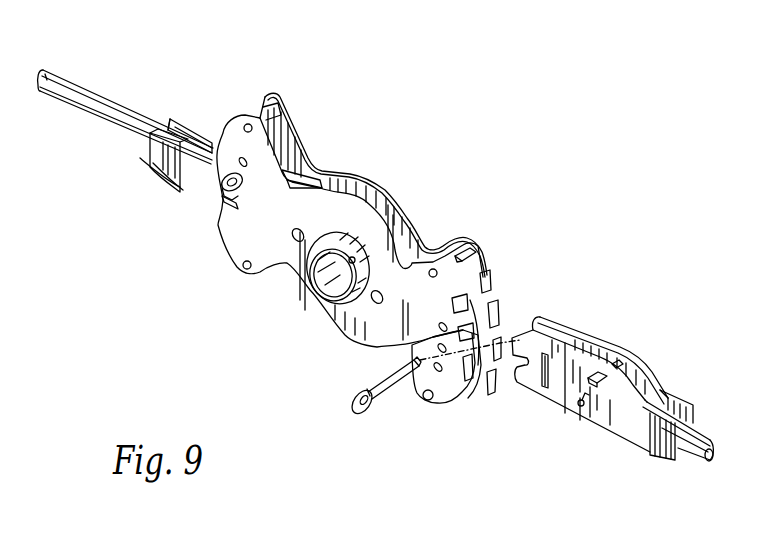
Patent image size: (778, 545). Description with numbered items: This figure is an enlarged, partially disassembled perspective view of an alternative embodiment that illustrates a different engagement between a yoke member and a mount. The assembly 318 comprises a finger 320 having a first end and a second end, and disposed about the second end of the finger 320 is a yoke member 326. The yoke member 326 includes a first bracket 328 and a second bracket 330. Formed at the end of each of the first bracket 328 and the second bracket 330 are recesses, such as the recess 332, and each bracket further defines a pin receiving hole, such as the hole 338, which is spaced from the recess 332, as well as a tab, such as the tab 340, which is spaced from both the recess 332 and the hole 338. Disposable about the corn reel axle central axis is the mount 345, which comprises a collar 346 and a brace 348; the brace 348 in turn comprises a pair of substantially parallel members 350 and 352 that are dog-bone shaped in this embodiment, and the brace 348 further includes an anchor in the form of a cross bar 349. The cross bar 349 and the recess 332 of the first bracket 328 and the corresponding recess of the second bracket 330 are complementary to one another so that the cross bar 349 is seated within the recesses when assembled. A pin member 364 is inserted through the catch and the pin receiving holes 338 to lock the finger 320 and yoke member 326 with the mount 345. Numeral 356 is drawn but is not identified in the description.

The assembly 318 is at (318, 98).
The finger 320 is at (62, 77).
The yoke member 326 is at (618, 292).
The first bracket 328 is at (638, 430).
The second bracket 330 is at (642, 386).
The recess 332 is at (521, 388).
The pin receiving hole 338 is at (578, 405).
The tab 340 is at (222, 203).
The mount 345 is at (395, 187).
The collar 346 is at (315, 270).
The brace 348 is at (358, 176).
The cross bar 349 is at (375, 298).
The parallel member 350 is at (190, 126).
The parallel member 352 is at (477, 293).
The lower plate 356 is at (418, 342).
The pin member 364 is at (358, 395).